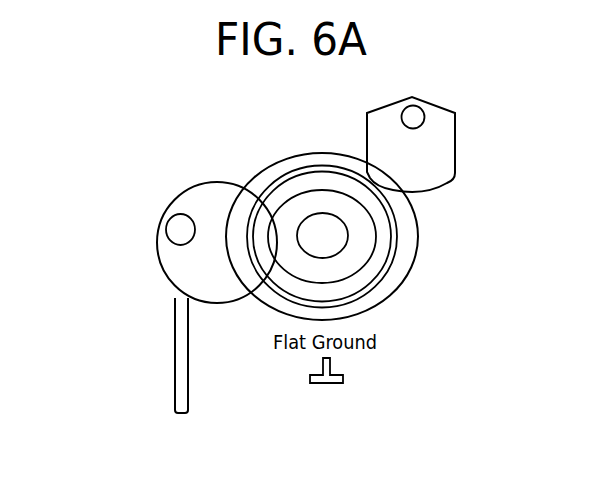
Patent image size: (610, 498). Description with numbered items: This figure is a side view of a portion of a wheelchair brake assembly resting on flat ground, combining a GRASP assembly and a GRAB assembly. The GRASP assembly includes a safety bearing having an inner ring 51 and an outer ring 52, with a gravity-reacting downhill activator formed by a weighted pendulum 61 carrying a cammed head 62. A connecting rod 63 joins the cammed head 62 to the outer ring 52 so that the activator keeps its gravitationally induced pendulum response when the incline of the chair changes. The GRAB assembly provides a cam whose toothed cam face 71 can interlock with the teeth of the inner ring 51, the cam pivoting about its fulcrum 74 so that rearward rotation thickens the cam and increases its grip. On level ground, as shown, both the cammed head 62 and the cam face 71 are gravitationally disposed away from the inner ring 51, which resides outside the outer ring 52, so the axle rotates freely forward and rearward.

The inner ring 51 is at (377, 267).
The outer ring 52 is at (408, 245).
The weighted pendulum 61 is at (175, 343).
The cammed head 62 is at (172, 260).
The connecting rod 63 is at (173, 226).
The cam face 71 is at (437, 188).
The fulcrum 74 is at (408, 110).